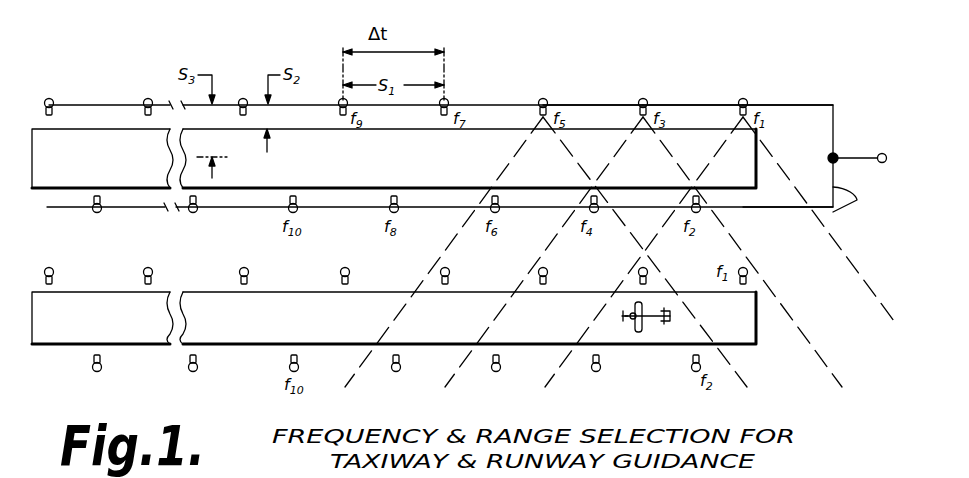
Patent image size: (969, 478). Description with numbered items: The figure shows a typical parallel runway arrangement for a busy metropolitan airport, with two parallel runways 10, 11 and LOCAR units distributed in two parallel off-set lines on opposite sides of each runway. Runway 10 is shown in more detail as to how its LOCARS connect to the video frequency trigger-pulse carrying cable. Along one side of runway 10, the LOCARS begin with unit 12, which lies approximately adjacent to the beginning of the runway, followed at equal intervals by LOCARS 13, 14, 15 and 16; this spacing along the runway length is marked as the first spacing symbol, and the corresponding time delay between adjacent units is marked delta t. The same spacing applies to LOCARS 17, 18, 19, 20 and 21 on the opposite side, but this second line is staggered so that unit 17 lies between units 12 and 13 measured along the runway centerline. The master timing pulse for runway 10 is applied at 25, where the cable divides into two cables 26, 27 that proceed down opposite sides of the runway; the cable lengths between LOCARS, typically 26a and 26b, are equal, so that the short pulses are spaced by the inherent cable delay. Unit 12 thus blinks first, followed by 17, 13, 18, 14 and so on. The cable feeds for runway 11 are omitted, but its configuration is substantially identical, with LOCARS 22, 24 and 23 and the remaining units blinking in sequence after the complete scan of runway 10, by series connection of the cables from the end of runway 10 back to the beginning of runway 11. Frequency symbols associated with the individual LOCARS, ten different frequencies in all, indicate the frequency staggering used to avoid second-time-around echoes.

The runway 10 is at (742, 169).
The runway 11 is at (742, 339).
The LOCAR 12 is at (748, 103).
The LOCAR 13 is at (641, 101).
The LOCAR 14 is at (538, 104).
The LOCAR 15 is at (448, 104).
The LOCAR 16 is at (339, 102).
The LOCAR 17 is at (699, 211).
The LOCAR 18 is at (598, 209).
The LOCAR 19 is at (500, 210).
The LOCAR 20 is at (399, 210).
The LOCAR 21 is at (298, 210).
The LOCAR 22 is at (749, 271).
The LOCAR 23 is at (647, 273).
The LOCAR 24 is at (692, 368).
The master timing pulse input 25 is at (878, 152).
The cable 26 is at (833, 117).
The cable length between LOCARS 26a is at (672, 104).
The cable length between LOCARS 26b is at (596, 104).
The cable 27 is at (858, 202).